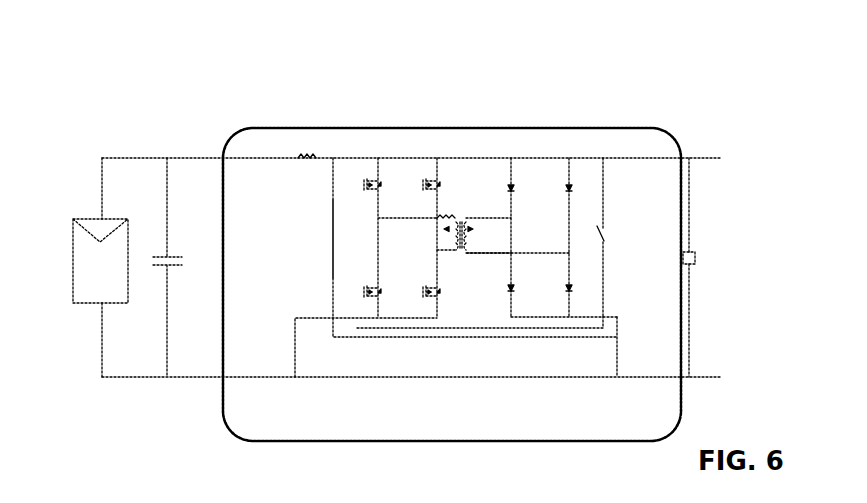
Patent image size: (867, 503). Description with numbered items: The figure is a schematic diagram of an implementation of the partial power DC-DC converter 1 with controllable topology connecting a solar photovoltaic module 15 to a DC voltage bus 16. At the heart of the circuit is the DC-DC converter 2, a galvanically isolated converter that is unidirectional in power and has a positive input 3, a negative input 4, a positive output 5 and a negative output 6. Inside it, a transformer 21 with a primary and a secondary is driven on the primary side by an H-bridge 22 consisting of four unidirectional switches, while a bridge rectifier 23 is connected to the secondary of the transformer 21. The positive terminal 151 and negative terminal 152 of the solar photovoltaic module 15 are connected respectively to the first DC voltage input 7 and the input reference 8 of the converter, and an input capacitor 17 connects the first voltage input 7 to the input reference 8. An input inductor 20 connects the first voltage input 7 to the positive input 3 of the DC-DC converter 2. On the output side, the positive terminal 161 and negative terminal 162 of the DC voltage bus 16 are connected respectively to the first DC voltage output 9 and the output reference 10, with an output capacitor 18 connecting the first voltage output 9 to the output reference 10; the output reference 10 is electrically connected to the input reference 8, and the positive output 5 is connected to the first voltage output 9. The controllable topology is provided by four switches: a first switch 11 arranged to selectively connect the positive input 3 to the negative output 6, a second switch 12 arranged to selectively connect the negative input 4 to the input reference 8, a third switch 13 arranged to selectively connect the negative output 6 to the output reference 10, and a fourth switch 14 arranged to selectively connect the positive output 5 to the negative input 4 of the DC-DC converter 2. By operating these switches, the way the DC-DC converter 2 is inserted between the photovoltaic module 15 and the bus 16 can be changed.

The partial power DC-DC converter 1 is at (441, 82).
The DC-DC converter 2 is at (463, 148).
The positive input 3 is at (357, 158).
The negative input 4 is at (405, 322).
The positive output 5 is at (590, 158).
The negative output 6 is at (532, 317).
The first DC voltage input 7 is at (258, 158).
The input reference 8 is at (253, 377).
The first DC voltage output 9 is at (640, 158).
The output reference 10 is at (643, 377).
The first switch 11 is at (331, 239).
The second switch 12 is at (290, 345).
The third switch 13 is at (617, 352).
The fourth switch 14 is at (605, 240).
The solar photovoltaic module 15 is at (73, 219).
The DC voltage bus 16 is at (751, 267).
The input capacitor 17 is at (163, 257).
The output capacitor 18 is at (696, 262).
The input inductor 20 is at (305, 158).
The transformer 21 is at (470, 230).
The H-bridge 22 is at (402, 162).
The bridge rectifier 23 is at (548, 158).
The positive terminal 151 is at (112, 158).
The negative terminal 152 is at (124, 377).
The positive terminal 161 is at (710, 158).
The negative terminal 162 is at (707, 377).